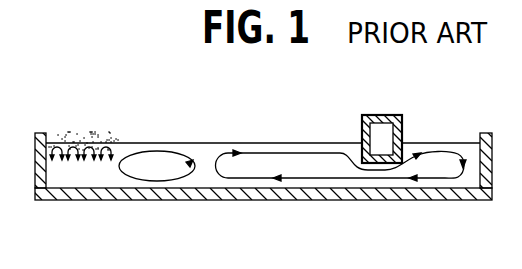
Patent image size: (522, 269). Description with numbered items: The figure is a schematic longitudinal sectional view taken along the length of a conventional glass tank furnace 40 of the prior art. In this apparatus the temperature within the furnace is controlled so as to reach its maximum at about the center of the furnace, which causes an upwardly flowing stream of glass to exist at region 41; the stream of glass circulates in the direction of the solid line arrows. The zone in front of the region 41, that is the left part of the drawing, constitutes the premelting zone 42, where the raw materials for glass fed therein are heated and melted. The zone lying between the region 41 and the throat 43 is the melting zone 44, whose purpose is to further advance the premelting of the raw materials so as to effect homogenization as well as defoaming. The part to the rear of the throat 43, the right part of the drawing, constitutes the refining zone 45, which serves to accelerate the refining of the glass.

The glass tank furnace 40 is at (314, 143).
The region 41 is at (210, 148).
The premelting zone 42 is at (84, 175).
The throat 43 is at (393, 192).
The melting zone 44 is at (305, 168).
The refining zone 45 is at (440, 152).